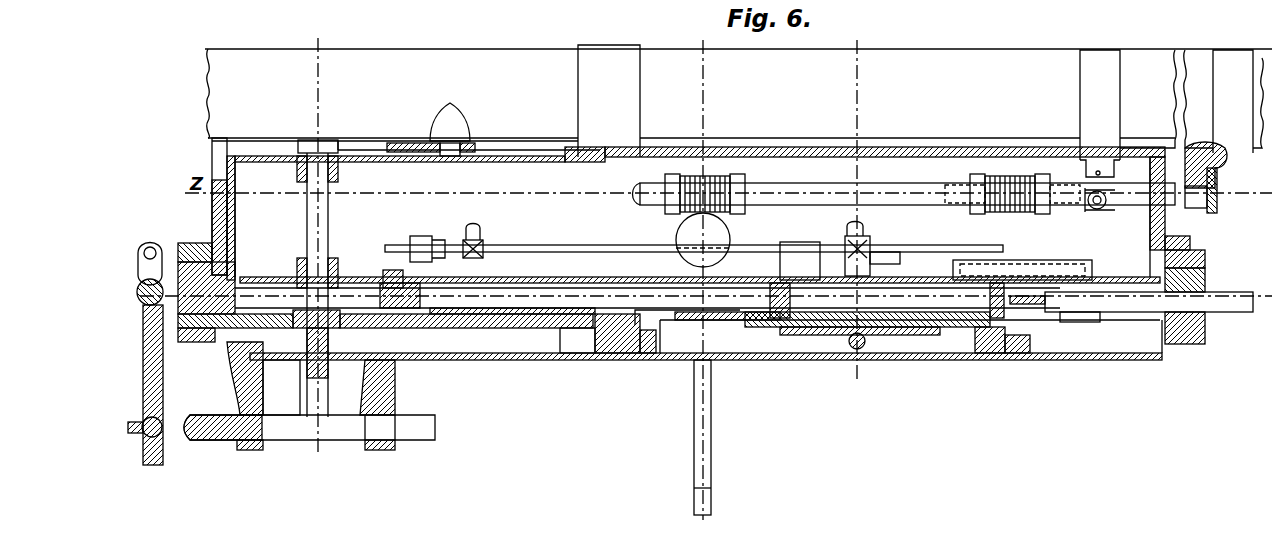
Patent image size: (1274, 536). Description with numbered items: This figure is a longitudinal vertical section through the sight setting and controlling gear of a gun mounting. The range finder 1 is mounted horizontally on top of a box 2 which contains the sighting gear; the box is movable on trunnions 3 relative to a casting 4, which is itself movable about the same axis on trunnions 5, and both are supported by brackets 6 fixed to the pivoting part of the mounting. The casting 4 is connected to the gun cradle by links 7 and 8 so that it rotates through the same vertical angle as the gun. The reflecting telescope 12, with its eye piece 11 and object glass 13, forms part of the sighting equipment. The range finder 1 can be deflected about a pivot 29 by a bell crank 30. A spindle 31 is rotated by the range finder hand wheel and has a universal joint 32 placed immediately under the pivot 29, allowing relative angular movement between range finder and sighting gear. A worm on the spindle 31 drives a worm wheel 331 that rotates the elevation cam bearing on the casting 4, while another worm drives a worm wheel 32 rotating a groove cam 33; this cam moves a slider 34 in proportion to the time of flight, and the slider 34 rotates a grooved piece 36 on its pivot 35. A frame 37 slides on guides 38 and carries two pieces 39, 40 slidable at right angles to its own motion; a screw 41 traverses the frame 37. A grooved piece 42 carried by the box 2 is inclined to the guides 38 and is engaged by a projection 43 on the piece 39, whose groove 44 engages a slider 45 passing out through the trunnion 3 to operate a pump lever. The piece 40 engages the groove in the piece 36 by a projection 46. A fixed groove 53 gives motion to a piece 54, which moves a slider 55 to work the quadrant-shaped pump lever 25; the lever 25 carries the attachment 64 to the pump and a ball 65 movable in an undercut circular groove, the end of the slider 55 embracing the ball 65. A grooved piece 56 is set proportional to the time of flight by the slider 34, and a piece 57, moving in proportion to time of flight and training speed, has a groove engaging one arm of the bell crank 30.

The range finder 1 is at (738, 111).
The box 2 is at (1143, 362).
The trunnions 3 is at (178, 312).
The casting 4 is at (215, 213).
The trunnions 5 is at (178, 331).
The brackets 6 is at (178, 340).
The link 7 is at (1218, 200).
The link 8 is at (145, 288).
The eye piece 11 is at (855, 204).
The reflecting telescope 12 is at (704, 269).
The object glass 13 is at (316, 242).
The pump lever 25 is at (130, 439).
The deflection pivot 29 is at (1103, 156).
The bell crank 30 is at (412, 144).
The spindle 31 is at (828, 198).
The universal joint 32 is at (940, 205).
The groove cam 33 is at (1092, 268).
The slider 34 is at (560, 242).
The pivot 35 is at (842, 254).
The grooved piece 36 is at (824, 328).
The frame 37 is at (867, 334).
The guides 38 is at (780, 278).
The piece 39 is at (744, 346).
The piece 40 is at (742, 318).
The screw 41 is at (866, 348).
The grooved piece 42 is at (993, 356).
The projection 43 is at (1015, 302).
The groove 44 is at (1093, 322).
The slider 45 is at (1202, 308).
The projection 46 is at (828, 358).
The fixed groove 53 is at (643, 356).
The piece 54 is at (602, 354).
The slider 55 is at (192, 424).
The grooved piece 56 is at (500, 328).
The piece 57 is at (433, 330).
The attachment to the pump 64 is at (150, 252).
The ball 65 is at (144, 420).
The worm wheel 331 is at (728, 230).